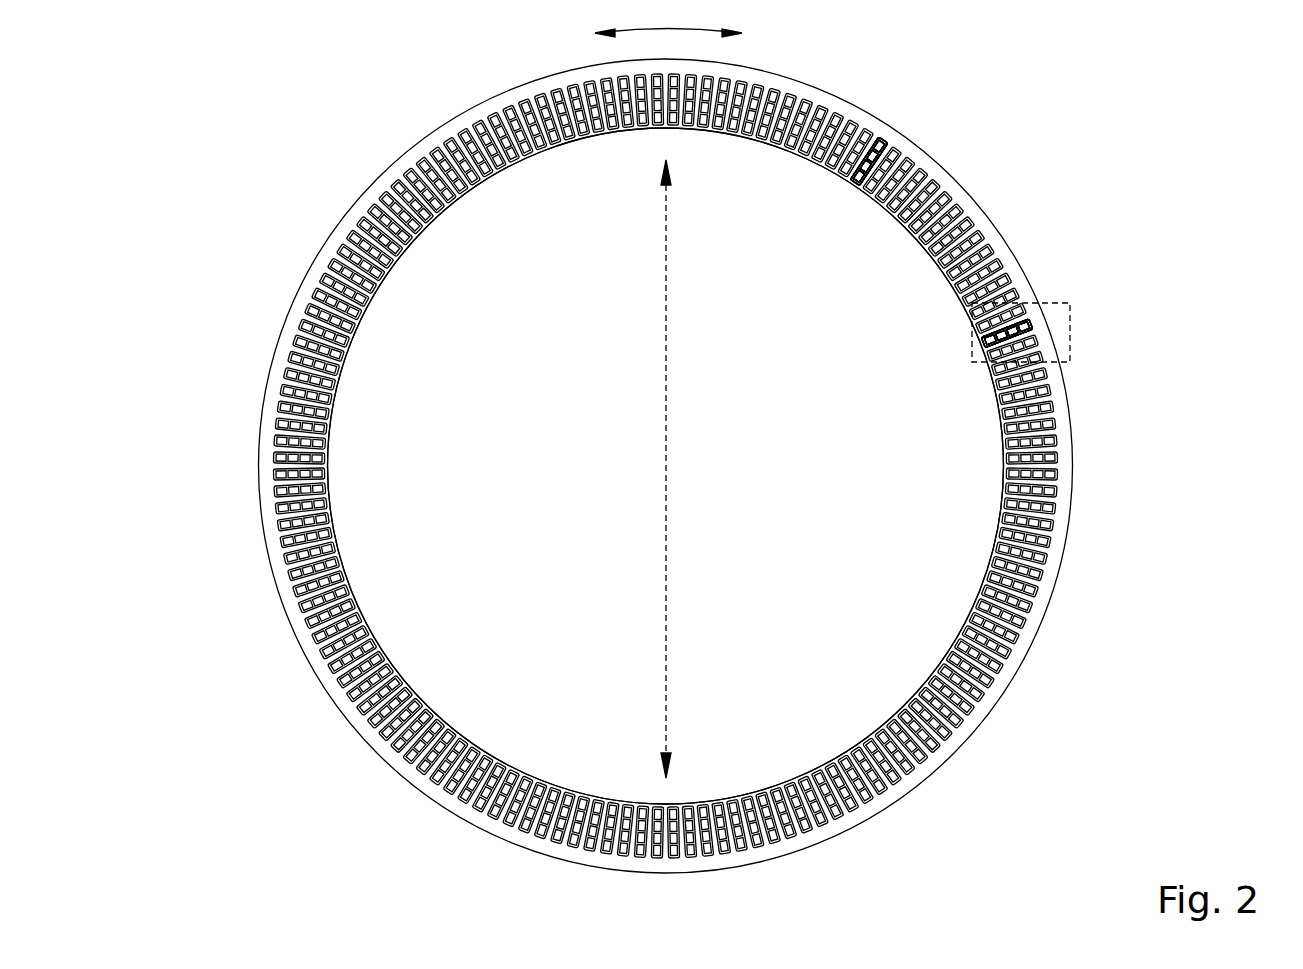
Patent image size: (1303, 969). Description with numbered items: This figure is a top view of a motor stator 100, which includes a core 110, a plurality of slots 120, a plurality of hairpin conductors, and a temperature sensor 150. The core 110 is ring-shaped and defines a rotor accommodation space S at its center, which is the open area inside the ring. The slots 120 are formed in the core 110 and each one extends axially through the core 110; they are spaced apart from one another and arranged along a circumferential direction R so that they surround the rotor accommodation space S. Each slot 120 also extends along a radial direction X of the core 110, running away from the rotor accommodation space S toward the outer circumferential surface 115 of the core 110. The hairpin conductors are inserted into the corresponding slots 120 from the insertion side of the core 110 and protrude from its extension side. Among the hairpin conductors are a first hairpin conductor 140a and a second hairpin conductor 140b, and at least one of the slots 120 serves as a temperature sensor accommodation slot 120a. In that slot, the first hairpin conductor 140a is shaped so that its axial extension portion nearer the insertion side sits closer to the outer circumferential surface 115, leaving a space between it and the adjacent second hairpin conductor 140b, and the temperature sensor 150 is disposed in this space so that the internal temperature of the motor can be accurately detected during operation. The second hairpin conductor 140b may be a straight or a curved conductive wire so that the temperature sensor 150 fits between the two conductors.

The motor stator 100 is at (768, 463).
The core 110 is at (725, 466).
The outer circumferential surface 115 is at (1083, 567).
The slot 120 is at (1013, 231).
The temperature sensor accommodation slot 120a is at (905, 112).
The first hairpin conductor 140a is at (890, 140).
The second hairpin conductor 140b is at (877, 153).
The temperature sensor 150 is at (882, 150).
The rotor accommodation space S is at (990, 475).
The radial direction X is at (665, 468).
The circumferential direction R is at (668, 19).